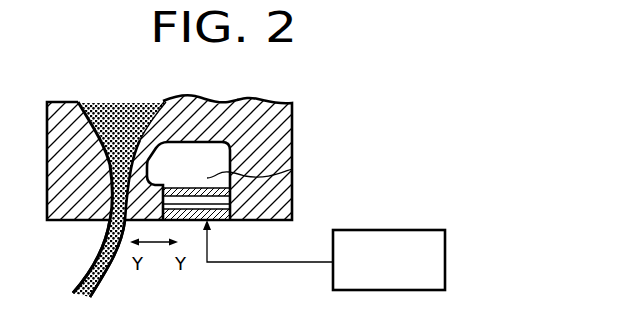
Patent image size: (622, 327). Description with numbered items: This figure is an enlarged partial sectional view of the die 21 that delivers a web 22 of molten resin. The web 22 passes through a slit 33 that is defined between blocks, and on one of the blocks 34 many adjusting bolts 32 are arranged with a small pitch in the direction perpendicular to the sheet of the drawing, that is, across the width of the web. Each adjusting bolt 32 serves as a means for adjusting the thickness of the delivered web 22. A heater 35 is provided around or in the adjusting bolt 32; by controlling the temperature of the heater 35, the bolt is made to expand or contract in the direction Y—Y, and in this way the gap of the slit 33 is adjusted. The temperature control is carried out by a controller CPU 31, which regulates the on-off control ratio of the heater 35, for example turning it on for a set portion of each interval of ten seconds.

The die 21 is at (300, 140).
The web of molten resin 22 is at (99, 279).
The controller CPU 31 is at (382, 230).
The adjusting bolt 32 is at (293, 169).
The slit 33 is at (112, 227).
The block 34 is at (153, 192).
The heater 35 is at (190, 221).